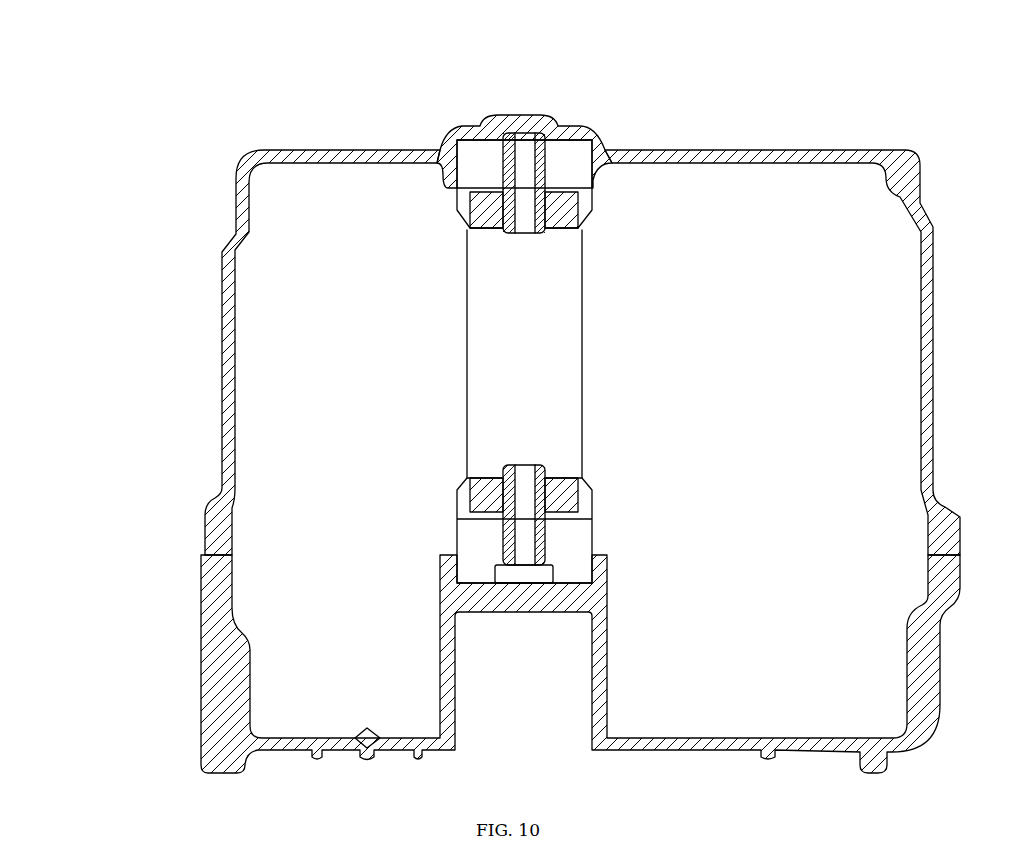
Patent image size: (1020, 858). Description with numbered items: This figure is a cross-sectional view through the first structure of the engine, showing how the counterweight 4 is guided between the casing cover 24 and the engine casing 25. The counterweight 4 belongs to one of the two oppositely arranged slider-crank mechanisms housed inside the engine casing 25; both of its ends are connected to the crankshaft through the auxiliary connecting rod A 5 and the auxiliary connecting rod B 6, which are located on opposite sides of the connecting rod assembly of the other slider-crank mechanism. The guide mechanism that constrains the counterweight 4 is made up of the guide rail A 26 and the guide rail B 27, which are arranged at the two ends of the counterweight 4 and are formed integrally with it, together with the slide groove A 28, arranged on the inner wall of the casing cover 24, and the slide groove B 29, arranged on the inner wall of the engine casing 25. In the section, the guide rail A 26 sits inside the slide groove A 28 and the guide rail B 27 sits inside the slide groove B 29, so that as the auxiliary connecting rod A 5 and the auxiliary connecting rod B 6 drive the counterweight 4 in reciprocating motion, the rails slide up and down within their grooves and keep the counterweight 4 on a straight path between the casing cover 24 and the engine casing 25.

The counterweight 4 is at (503, 437).
The auxiliary connecting rod A 5 is at (550, 218).
The auxiliary connecting rod B 6 is at (490, 498).
The casing cover 24 is at (230, 675).
The engine casing 25 is at (233, 388).
The guide rail A 26 is at (577, 162).
The guide rail B 27 is at (488, 537).
The slide groove A 28 is at (555, 135).
The slide groove B 29 is at (497, 570).